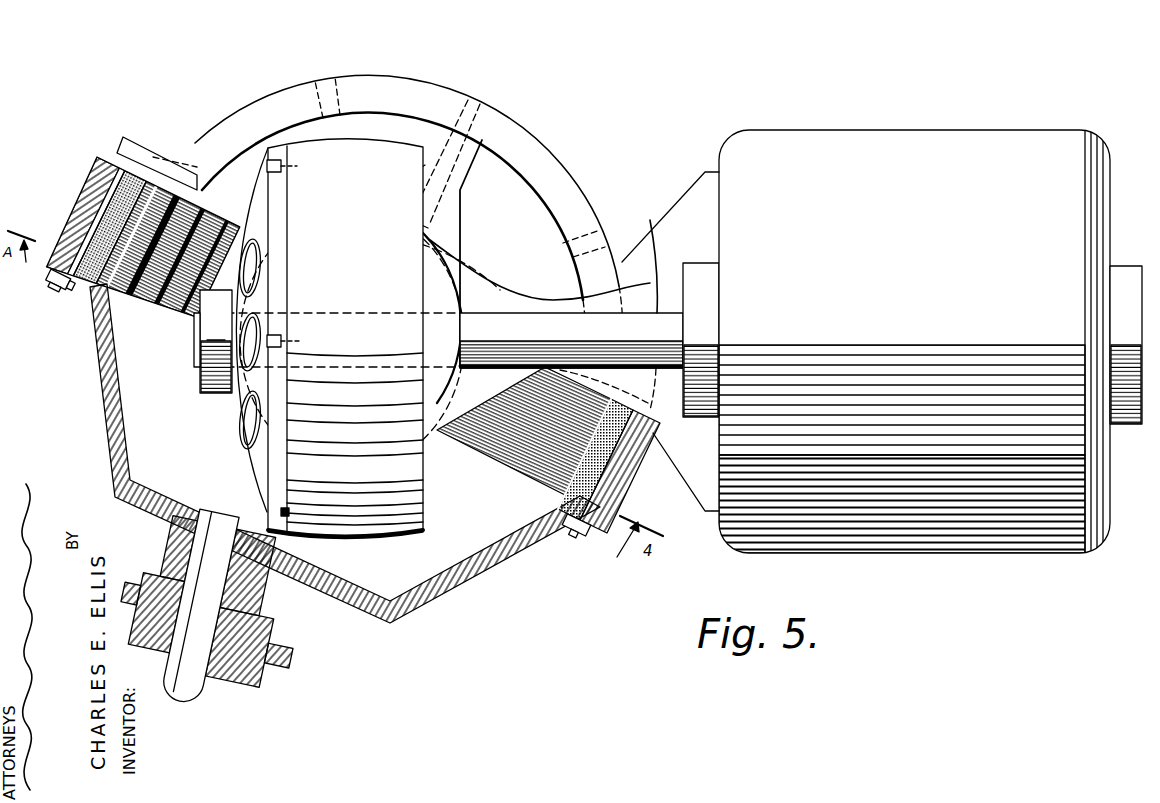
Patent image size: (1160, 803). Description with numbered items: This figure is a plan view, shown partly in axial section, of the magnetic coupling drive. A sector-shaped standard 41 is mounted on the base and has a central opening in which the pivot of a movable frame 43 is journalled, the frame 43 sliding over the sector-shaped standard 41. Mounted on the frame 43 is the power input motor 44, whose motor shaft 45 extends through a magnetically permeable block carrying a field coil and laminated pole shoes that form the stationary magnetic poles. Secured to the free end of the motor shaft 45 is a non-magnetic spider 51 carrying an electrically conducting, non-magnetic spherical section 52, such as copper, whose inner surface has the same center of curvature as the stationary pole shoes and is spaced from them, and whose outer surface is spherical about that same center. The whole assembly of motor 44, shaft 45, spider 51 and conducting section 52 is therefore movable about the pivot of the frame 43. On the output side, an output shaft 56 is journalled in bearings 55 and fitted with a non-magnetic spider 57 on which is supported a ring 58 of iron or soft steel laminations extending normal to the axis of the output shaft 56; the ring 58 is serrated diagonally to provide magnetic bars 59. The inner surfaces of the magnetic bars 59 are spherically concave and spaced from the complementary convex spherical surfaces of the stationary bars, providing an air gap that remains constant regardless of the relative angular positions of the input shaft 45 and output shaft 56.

The sector-shaped standard 41 is at (528, 150).
The movable frame 43 is at (597, 302).
The power input motor 44 is at (849, 143).
The motor shaft 45 is at (487, 322).
The non-magnetic spider 51 is at (253, 457).
The conducting non-magnetic spherical section 52 is at (355, 160).
The bearings 55 is at (175, 588).
The output shaft 56 is at (215, 687).
The non-magnetic spider 57 is at (343, 600).
The ring 58 is at (58, 289).
The magnetic bars 59 is at (157, 200).